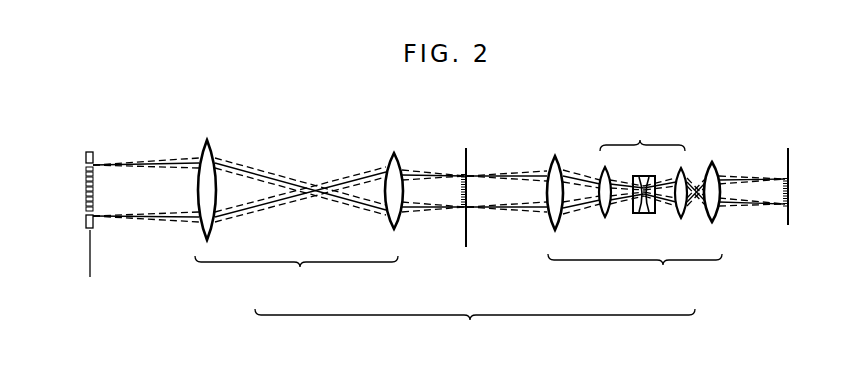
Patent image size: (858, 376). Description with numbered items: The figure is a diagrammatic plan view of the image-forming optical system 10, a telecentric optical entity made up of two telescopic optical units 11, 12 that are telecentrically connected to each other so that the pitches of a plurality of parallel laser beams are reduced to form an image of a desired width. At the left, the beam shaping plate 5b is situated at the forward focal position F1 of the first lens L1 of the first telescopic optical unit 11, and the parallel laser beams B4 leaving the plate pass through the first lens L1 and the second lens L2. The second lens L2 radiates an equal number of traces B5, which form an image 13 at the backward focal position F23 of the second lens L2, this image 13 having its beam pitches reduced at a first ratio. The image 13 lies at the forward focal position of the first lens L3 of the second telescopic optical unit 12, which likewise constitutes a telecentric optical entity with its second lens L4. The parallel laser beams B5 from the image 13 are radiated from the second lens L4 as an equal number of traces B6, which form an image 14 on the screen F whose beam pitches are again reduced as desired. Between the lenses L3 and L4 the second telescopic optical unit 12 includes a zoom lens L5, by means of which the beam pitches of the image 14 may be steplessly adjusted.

The beam shaping plate 5b is at (89, 142).
The forward focal position F1 is at (97, 202).
The parallel laser beams B4 is at (148, 162).
The first lens L1 is at (207, 142).
The second lens L2 is at (393, 152).
The first telescopic optical unit 11 is at (299, 198).
The traces B5 is at (493, 172).
The backward focal position F23 is at (457, 213).
The image 13 is at (460, 183).
The first lens L3 is at (553, 152).
The zoom lens L5 is at (643, 166).
The second lens L4 is at (713, 160).
The second telescopic optical unit 12 is at (643, 198).
The image-forming optical system 10 is at (468, 227).
The traces B6 is at (760, 176).
The screen F is at (791, 157).
The image 14 is at (780, 191).